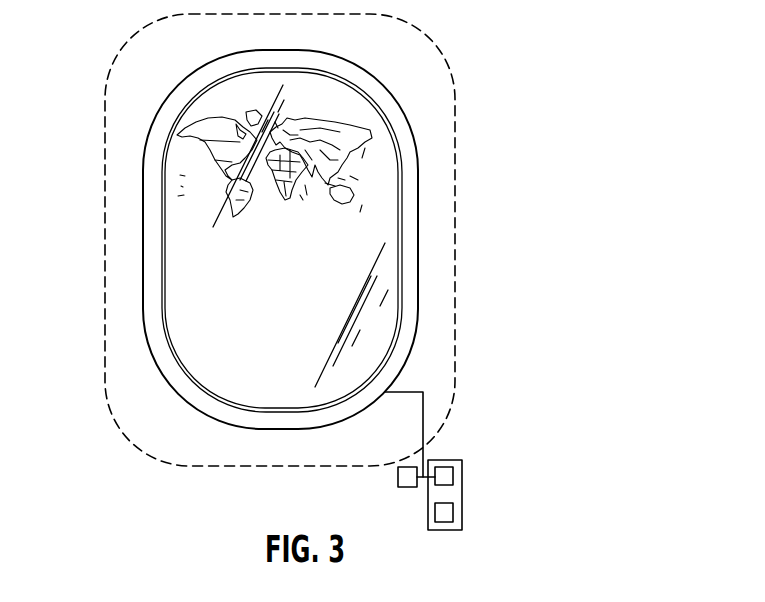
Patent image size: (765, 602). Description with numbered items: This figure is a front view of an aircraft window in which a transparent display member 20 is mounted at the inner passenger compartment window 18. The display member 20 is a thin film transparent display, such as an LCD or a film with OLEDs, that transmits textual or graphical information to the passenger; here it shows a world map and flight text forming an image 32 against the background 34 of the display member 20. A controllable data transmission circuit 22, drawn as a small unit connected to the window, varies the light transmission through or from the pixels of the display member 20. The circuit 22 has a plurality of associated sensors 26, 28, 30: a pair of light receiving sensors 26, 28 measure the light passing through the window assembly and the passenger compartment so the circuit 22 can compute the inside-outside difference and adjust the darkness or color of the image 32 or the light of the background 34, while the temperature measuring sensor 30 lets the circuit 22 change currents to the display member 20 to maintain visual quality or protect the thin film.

The inner passenger compartment window 18 is at (163, 185).
The transparent display member 20 is at (183, 220).
The controllable data transmission circuit 22 is at (524, 461).
The light receiving sensor 26 is at (524, 461).
The light receiving sensor 28 is at (524, 461).
The temperature measuring sensor 30 is at (462, 457).
The image 32 is at (362, 138).
The background 34 is at (183, 171).